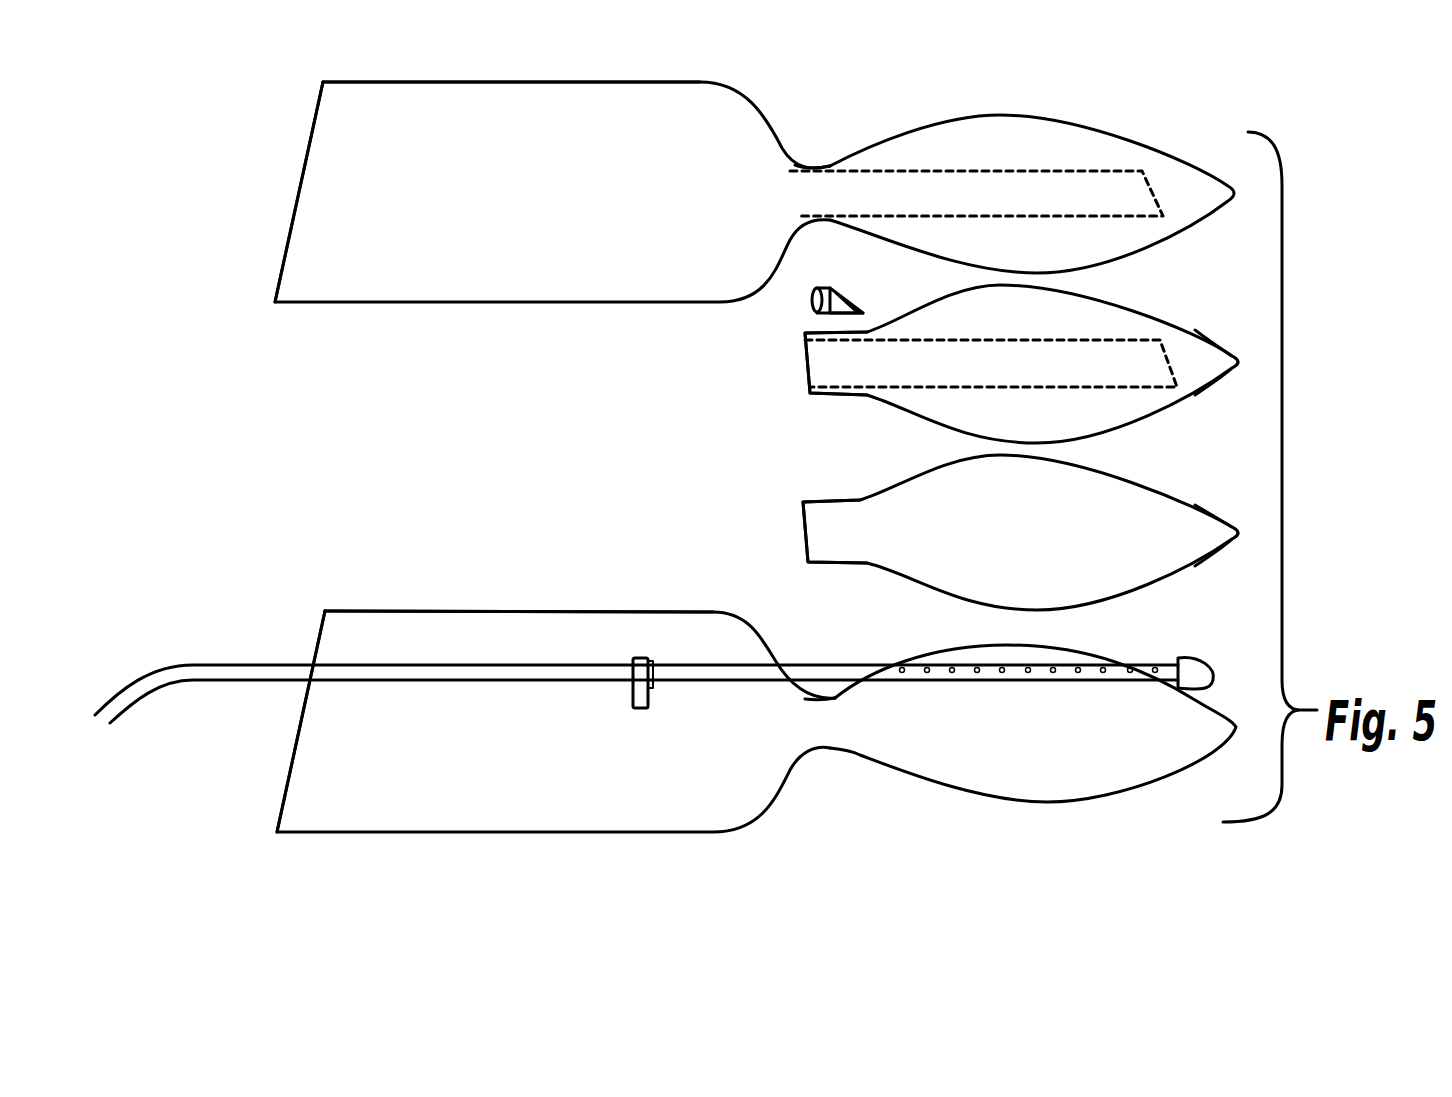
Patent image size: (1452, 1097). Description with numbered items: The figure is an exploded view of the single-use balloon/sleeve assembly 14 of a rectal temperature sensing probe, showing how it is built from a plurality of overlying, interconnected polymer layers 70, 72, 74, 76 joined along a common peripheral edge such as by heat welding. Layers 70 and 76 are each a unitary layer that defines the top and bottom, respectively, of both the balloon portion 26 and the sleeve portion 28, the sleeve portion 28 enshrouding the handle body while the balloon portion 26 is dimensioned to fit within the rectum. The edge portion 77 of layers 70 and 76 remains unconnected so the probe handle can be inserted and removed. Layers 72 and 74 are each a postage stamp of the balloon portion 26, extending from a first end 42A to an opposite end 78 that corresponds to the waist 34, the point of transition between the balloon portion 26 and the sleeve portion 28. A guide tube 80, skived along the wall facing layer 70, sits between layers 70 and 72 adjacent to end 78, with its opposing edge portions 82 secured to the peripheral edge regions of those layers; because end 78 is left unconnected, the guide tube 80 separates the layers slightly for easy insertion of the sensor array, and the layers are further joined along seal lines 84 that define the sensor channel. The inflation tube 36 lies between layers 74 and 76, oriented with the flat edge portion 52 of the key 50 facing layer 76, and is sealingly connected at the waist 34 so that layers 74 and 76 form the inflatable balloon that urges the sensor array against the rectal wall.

The balloon/sleeve assembly 14 is at (641, 80).
The balloon portion 26 is at (1044, 462).
The sleeve portion 28 is at (430, 82).
The waist 34 is at (845, 151).
The inflation tube 36 is at (298, 665).
The first end 42A is at (1242, 361).
The key 50 is at (672, 675).
The flat edge portion 52 is at (652, 687).
The layer 70 is at (1107, 126).
The layer 72 is at (1170, 305).
The layer 74 is at (1170, 487).
The layer 76 is at (1222, 688).
The edge portion 77 is at (303, 173).
The end 78 is at (797, 367).
The guide tube 80 is at (822, 287).
The edge portions 82 is at (819, 293).
The seal lines 84 is at (955, 171).